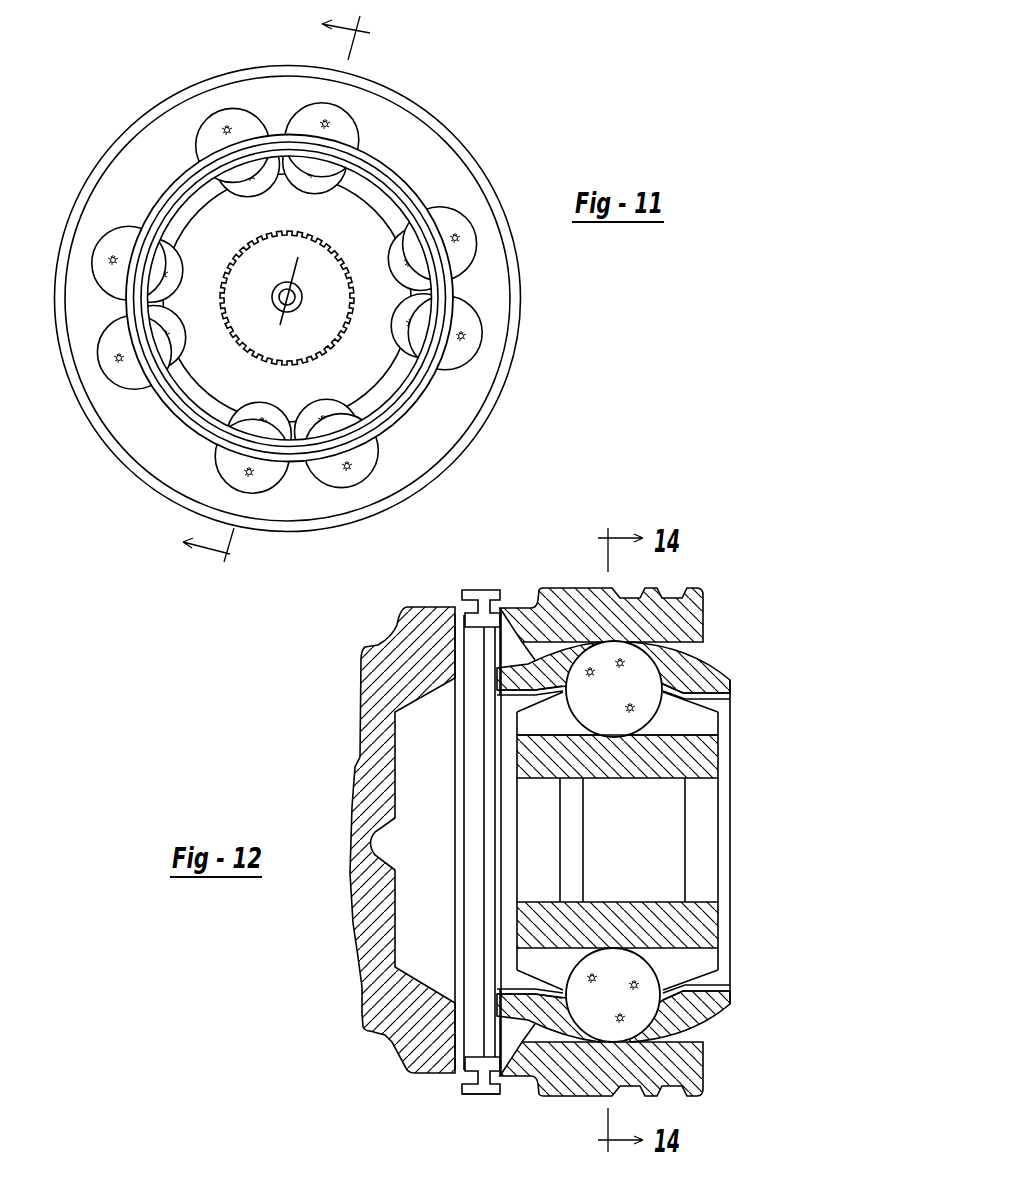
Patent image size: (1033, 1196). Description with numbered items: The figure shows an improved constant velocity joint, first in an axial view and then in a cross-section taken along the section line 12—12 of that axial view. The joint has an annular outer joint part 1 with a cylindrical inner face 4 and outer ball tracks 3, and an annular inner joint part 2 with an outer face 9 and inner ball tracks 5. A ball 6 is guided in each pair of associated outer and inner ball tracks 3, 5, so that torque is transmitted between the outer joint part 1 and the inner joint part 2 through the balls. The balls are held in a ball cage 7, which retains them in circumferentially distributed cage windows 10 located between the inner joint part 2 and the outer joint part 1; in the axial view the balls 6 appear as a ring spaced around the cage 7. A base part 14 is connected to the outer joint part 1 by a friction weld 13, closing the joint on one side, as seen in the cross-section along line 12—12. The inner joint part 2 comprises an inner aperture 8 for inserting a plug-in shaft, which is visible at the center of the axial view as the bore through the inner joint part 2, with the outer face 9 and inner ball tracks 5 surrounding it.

In FIG. 11, the outer joint part 1 is at (391, 115).
In FIG. 12, the outer joint part 1 is at (703, 618).
In FIG. 11, the inner joint part 2 is at (316, 176).
In FIG. 12, the inner joint part 2 is at (710, 753).
In FIG. 11, the outer ball tracks 3 is at (200, 121).
In FIG. 12, the outer ball tracks 3 is at (673, 648).
In FIG. 12, the cylindrical inner face 4 is at (687, 1030).
In FIG. 11, the inner ball tracks 5 is at (260, 182).
In FIG. 12, the inner ball tracks 5 is at (677, 723).
In FIG. 11, the ball 6 is at (206, 126).
In FIG. 12, the ball 6 is at (613, 668).
In FIG. 11, the ball cage 7 is at (170, 180).
In FIG. 12, the ball cage 7 is at (514, 679).
In FIG. 11, the inner aperture 8 is at (281, 357).
In FIG. 12, the inner aperture 8 is at (603, 781).
In FIG. 12, the outer face 9 is at (715, 1005).
In FIG. 12, the cage windows 10 is at (588, 648).
In FIG. 11, the section line 12— 12 is at (262, 286).
In FIG. 12, the friction weld 13 is at (482, 1087).
In FIG. 12, the base part 14 is at (400, 1028).